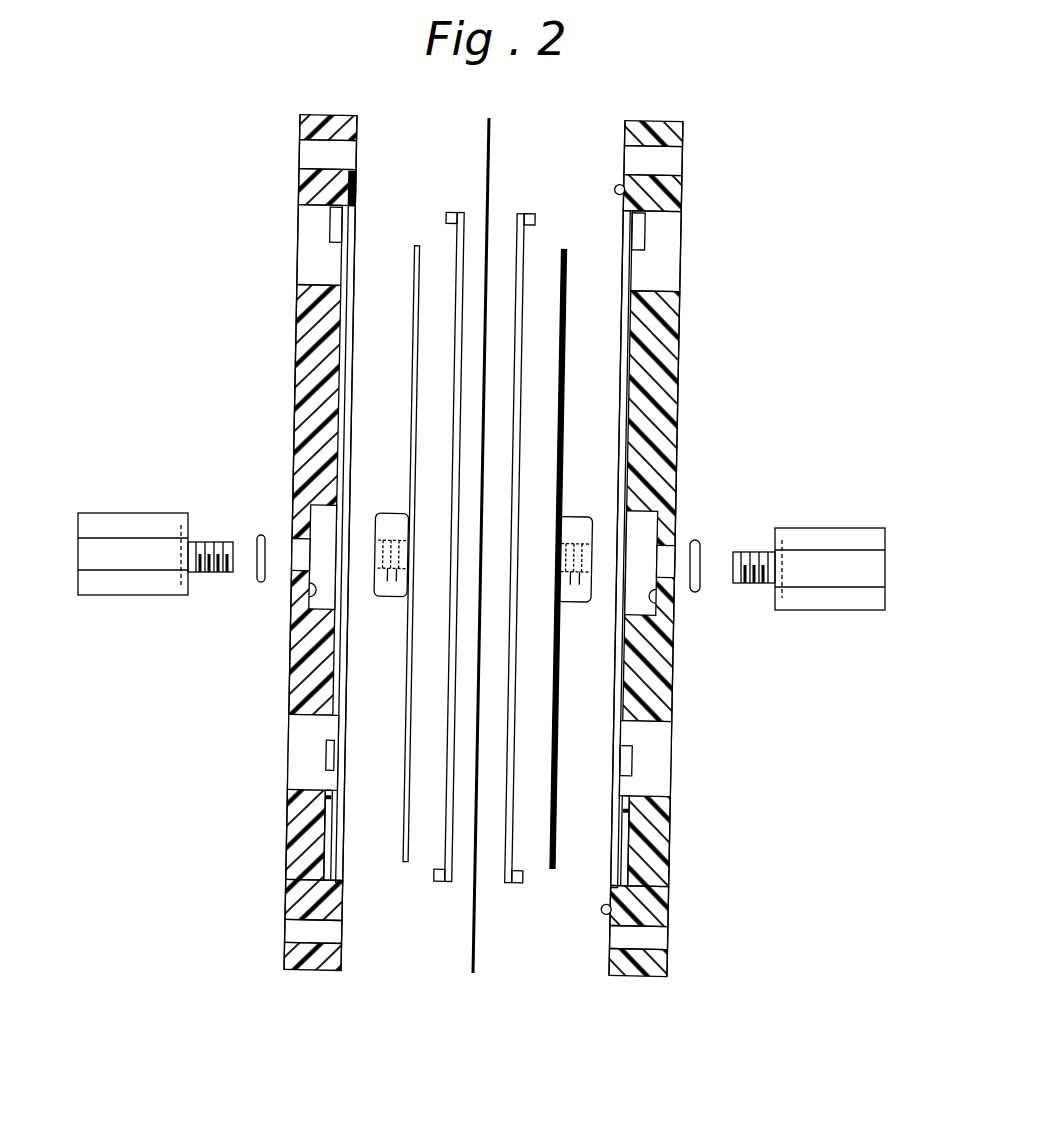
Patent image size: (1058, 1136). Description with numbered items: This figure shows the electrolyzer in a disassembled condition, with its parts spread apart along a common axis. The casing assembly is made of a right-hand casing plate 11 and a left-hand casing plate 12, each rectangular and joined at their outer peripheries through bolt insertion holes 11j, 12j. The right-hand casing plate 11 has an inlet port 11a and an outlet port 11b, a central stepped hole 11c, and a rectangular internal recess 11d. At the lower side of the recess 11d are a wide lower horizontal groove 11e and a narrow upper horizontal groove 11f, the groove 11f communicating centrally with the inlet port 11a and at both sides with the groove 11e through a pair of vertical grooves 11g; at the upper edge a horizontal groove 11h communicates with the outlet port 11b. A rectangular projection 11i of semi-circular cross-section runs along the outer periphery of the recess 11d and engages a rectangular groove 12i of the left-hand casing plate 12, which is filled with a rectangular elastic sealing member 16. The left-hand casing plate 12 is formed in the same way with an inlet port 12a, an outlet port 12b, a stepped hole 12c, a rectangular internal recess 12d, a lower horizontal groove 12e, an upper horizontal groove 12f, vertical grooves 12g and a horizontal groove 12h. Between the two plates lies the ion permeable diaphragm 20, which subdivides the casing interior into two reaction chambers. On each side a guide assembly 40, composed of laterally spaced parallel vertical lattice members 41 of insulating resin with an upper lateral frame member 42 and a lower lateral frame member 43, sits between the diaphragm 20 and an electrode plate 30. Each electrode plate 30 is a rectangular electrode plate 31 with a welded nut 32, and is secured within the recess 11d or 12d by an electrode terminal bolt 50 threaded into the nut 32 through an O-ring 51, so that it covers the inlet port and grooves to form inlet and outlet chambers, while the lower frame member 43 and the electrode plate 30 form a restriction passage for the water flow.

The right-hand casing plate 11 is at (670, 426).
The inlet port 11a is at (660, 759).
The outlet port 11b is at (670, 273).
The stepped hole 11c is at (658, 600).
The rectangular internal recess 11d is at (612, 882).
The lower horizontal groove 11e is at (623, 846).
The upper horizontal groove 11f is at (624, 762).
The vertical grooves 11g is at (627, 812).
The horizontal groove 11h is at (636, 240).
The rectangular projection 11i is at (672, 200).
The bolt insertion holes 11j is at (668, 160).
The left-hand casing plate 12 is at (300, 422).
The inlet port 12a is at (302, 750).
The outlet port 12b is at (306, 266).
The stepped hole 12c is at (307, 597).
The rectangular internal recess 12d is at (344, 878).
The lower horizontal groove 12e is at (336, 840).
The upper horizontal groove 12f is at (340, 756).
The vertical grooves 12g is at (335, 806).
The horizontal groove 12h is at (341, 238).
The rectangular groove 12i is at (302, 202).
The bolt insertion holes 12j is at (302, 157).
The rectangular elastic sealing member 16 is at (354, 188).
The ion permeable diaphragm 20 is at (477, 963).
The electrode plates 30 is at (407, 514).
The rectangular electrode plate 31 is at (406, 681).
The nut 32 is at (390, 600).
The guide assemblies 40 is at (460, 212).
The vertical lattice members 41 is at (455, 466).
The upper lateral frame member 42 is at (451, 212).
The lower lateral frame member 43 is at (440, 886).
The electrode terminal bolts 50 is at (153, 527).
The O-ring 51 is at (260, 535).